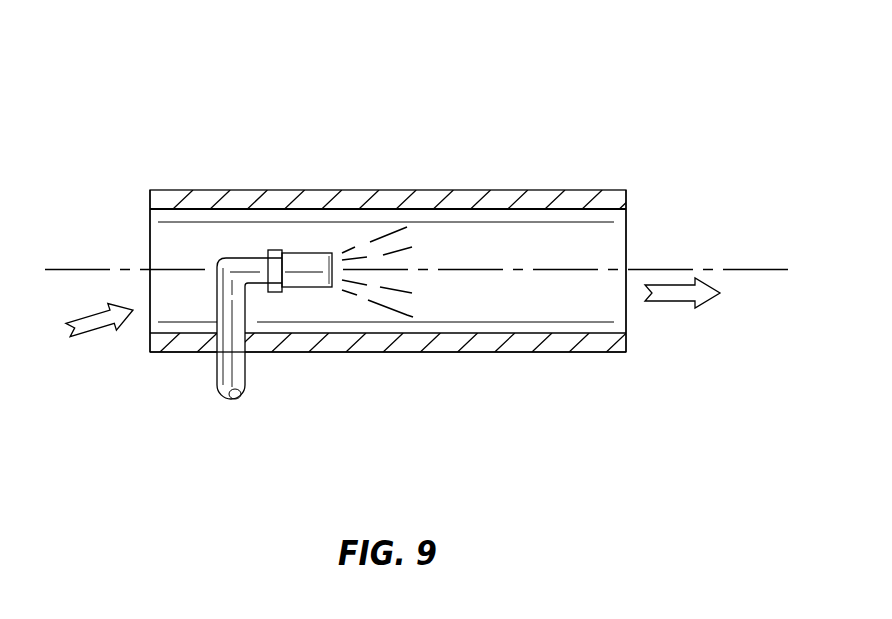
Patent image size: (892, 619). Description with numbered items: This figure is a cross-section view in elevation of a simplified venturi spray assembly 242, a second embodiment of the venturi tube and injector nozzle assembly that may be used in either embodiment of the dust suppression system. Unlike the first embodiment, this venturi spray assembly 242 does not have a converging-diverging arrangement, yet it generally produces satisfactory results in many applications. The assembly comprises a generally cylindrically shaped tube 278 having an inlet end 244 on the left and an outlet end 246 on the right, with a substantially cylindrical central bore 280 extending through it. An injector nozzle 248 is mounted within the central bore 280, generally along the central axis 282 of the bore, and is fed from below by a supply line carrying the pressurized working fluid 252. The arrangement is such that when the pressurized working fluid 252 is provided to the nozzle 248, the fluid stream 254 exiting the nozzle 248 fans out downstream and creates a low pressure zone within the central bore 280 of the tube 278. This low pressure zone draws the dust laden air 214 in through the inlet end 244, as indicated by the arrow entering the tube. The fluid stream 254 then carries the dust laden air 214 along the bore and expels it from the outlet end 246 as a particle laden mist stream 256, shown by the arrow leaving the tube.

The venturi spray assembly 242 is at (150, 114).
The inlet end 244 is at (150, 236).
The outlet end 246 is at (626, 236).
The injector nozzle 248 is at (310, 253).
The pressurized working fluid 252 is at (235, 435).
The fluid stream 254 is at (403, 313).
The particle laden mist stream 256 is at (670, 303).
The tube 278 is at (495, 190).
The central bore 280 is at (528, 307).
The central axis 282 is at (778, 268).
The dust laden air 214 is at (90, 338).